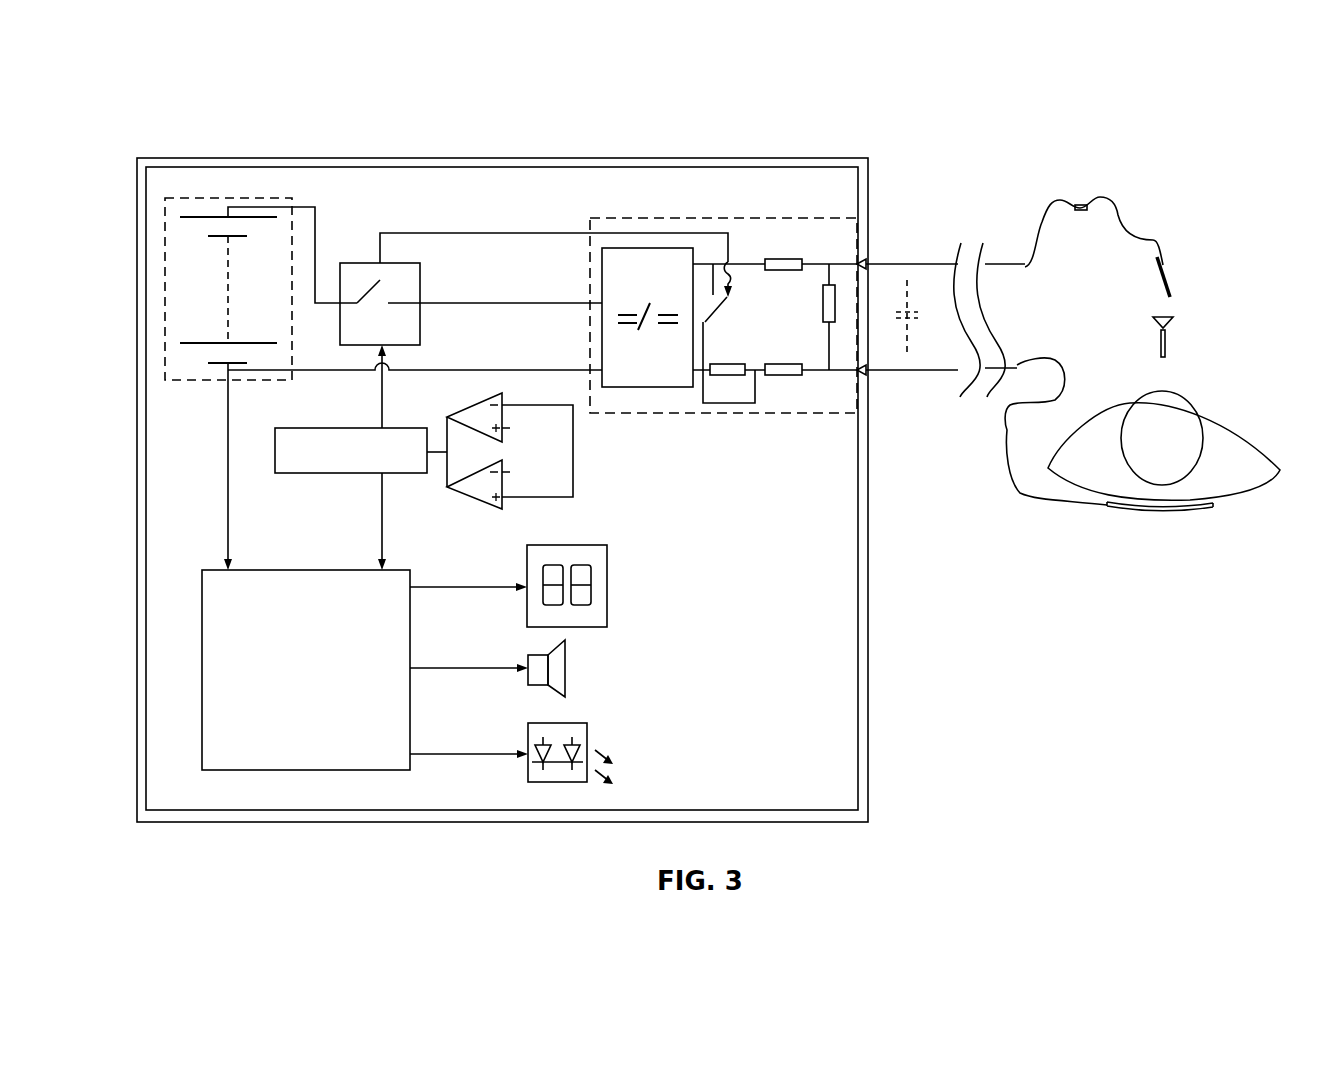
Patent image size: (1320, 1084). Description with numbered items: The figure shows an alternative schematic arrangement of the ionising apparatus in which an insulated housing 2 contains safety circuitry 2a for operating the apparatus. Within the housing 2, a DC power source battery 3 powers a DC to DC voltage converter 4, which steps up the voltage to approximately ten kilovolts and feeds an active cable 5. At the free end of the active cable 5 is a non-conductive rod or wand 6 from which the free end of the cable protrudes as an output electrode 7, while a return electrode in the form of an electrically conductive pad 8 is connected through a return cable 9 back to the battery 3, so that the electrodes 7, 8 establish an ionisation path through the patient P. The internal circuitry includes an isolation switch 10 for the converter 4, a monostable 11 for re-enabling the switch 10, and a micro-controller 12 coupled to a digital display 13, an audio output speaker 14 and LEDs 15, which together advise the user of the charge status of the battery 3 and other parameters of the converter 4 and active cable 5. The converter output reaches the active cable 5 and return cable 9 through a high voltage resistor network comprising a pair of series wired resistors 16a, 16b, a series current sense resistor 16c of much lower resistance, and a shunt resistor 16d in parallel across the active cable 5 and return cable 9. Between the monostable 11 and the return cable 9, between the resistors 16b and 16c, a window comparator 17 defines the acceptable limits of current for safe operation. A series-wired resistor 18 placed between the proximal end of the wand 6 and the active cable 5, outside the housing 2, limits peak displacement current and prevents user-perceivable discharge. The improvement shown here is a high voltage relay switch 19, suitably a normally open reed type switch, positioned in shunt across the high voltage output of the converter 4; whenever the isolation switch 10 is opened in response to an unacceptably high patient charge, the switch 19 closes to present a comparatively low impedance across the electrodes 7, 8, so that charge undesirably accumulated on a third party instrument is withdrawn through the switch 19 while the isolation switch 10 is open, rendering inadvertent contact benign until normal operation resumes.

The insulated housing 2 is at (868, 486).
The safety circuitry 2a is at (724, 610).
The DC power source battery 3 is at (206, 197).
The DC to DC voltage converter 4 is at (648, 247).
The active cable 5 is at (1033, 258).
The non-conductive rod or wand 6 is at (1167, 275).
The output electrode 7 is at (1170, 297).
The electrically conductive pad 8 is at (1162, 511).
The return cable 9 is at (1045, 498).
The isolation switch 10 is at (420, 283).
The monostable 11 is at (327, 428).
The micro-controller 12 is at (300, 570).
The digital display 13 is at (607, 585).
The audio output speaker 14 is at (565, 668).
The LEDs 15 is at (587, 737).
The series wired resistor 16a is at (780, 262).
The series wired resistor 16b is at (783, 375).
The series current sense resistor 16c is at (728, 375).
The shunt resistor 16d is at (832, 303).
The window comparator 17 is at (573, 452).
The series-wired resistor 18 is at (1083, 202).
The high voltage relay switch 19 is at (710, 313).
The patient P is at (1227, 438).